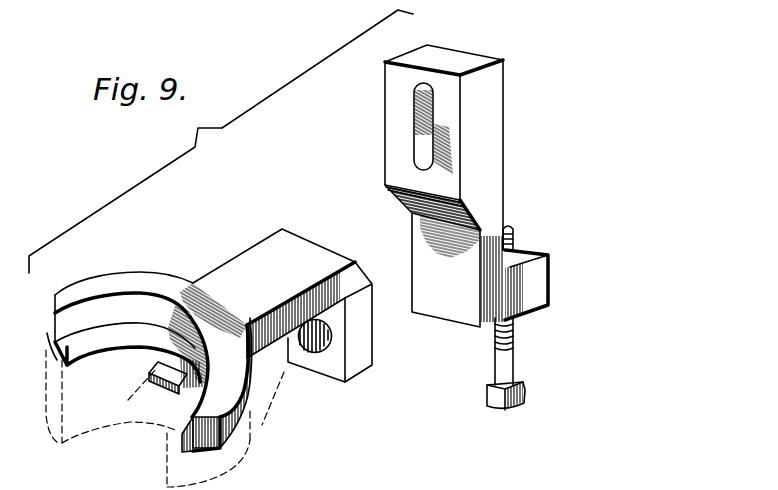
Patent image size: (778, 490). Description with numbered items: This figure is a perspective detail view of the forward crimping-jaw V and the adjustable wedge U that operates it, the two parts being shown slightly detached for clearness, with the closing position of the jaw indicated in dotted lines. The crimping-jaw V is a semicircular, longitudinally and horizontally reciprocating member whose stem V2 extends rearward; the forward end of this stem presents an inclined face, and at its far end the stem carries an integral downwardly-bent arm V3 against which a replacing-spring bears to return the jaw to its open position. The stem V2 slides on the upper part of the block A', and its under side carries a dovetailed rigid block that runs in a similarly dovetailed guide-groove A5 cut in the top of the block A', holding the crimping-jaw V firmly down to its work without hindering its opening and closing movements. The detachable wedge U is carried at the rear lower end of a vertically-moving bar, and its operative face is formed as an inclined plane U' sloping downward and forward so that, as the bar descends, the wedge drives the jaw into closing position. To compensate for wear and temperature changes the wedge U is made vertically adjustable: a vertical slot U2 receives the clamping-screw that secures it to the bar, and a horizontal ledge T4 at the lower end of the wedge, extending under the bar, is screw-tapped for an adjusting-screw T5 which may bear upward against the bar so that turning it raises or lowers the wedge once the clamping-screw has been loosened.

The detachable wedge U is at (305, 243).
The inclined plane U' is at (417, 209).
The vertical slot U2 is at (415, 131).
The crimping-jaw V is at (149, 352).
The lug of dog V' is at (173, 387).
The stem V2 is at (247, 316).
The downwardly-bent arm V3 is at (358, 264).
The horizontal ledge T4 is at (548, 284).
The adjusting-screw T5 is at (512, 358).
The block A' is at (165, 418).
The dovetailed guide-groove A5 is at (126, 391).